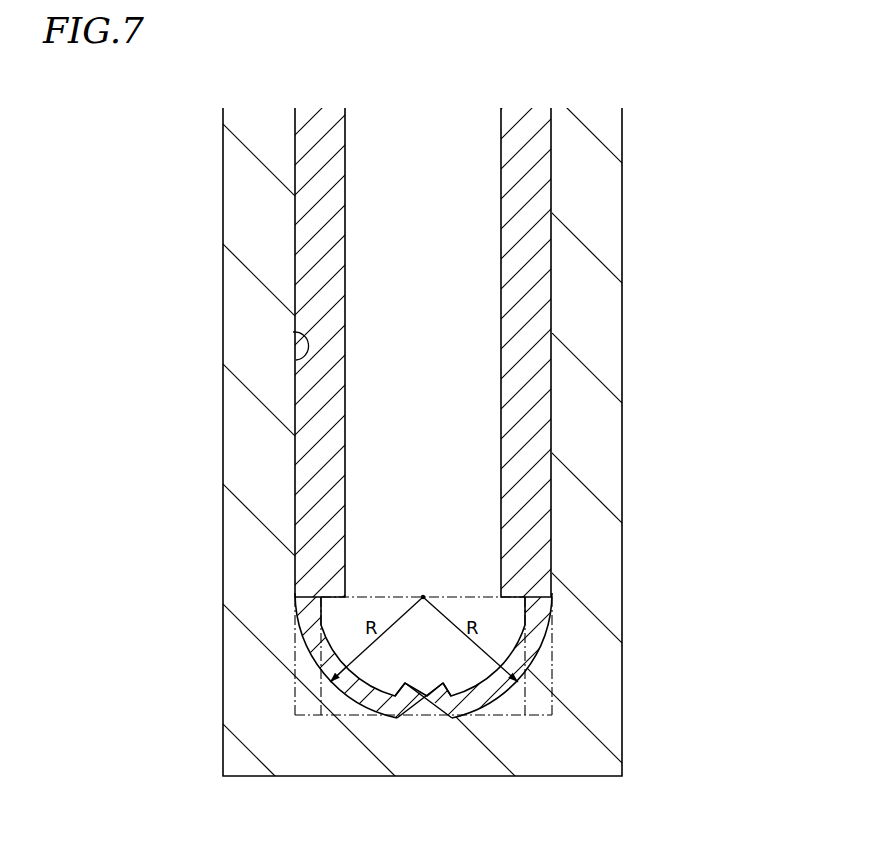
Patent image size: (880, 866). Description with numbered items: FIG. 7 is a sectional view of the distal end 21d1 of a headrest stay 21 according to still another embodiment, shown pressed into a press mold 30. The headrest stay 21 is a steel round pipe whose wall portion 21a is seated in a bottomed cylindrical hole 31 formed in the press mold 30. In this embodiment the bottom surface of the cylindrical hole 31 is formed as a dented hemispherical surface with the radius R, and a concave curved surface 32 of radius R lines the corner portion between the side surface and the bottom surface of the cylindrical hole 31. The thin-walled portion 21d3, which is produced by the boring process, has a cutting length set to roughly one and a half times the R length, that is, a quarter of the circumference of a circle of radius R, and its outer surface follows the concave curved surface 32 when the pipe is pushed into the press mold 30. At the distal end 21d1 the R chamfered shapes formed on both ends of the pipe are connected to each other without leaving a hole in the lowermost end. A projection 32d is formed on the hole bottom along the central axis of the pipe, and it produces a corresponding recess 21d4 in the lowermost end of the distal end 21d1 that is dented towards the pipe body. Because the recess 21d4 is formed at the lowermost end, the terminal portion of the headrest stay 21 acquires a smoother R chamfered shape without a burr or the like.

The press mold 30 is at (603, 447).
The headrest stay 21 is at (440, 413).
The wall portion 21a is at (537, 322).
The distal end 21d1 is at (538, 648).
The thin-walled portion 21d3 is at (553, 639).
The recess 21d4 is at (420, 703).
The cylindrical hole 31 is at (293, 332).
The concave curved surface 32 is at (325, 633).
The projection 32d is at (437, 707).